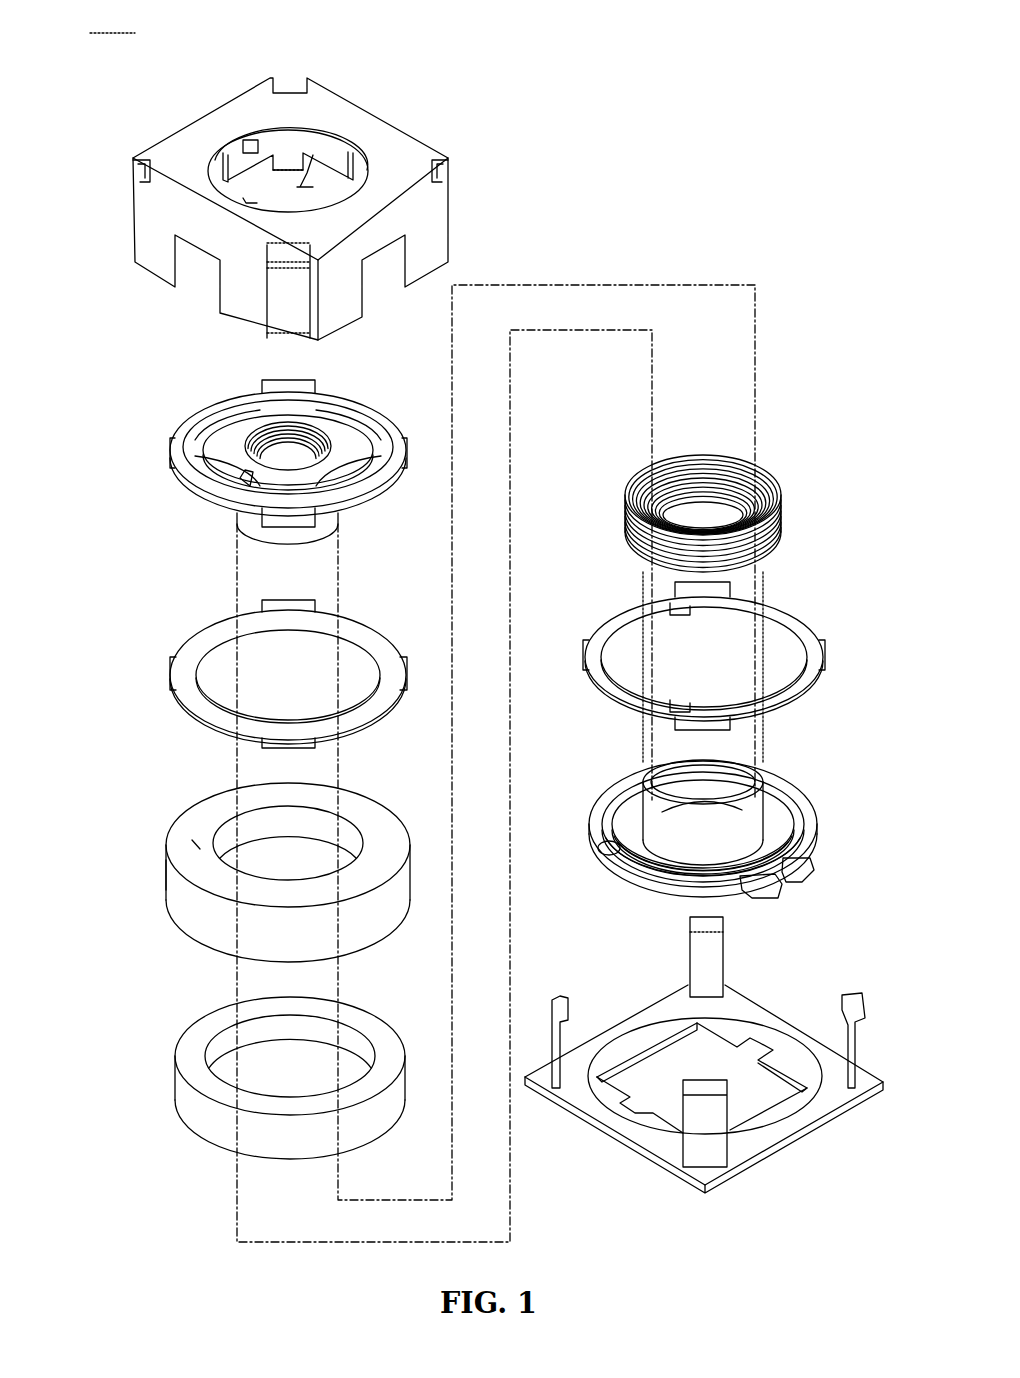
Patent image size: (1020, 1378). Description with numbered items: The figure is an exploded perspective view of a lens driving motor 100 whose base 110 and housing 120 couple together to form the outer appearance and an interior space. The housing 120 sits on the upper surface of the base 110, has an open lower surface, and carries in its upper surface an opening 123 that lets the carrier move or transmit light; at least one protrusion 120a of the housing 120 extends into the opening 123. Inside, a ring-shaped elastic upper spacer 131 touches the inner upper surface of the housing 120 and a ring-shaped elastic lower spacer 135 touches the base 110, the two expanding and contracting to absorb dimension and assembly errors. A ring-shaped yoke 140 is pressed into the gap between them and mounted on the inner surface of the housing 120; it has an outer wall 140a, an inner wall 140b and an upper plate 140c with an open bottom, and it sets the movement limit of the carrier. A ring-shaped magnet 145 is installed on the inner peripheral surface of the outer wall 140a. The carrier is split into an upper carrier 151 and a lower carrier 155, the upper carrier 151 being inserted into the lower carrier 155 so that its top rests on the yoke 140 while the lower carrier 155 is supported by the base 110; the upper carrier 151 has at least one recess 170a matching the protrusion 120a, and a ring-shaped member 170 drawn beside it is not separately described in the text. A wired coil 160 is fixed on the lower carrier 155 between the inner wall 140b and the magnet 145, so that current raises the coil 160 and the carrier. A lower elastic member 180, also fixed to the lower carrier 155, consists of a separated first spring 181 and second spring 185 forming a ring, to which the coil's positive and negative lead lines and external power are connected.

The lens driving motor 100 is at (114, 19).
The base 110 is at (837, 1110).
The housing 120 is at (185, 152).
The protrusion 120a is at (250, 147).
The opening 123 is at (313, 155).
The upper spacer 131 is at (175, 672).
The lower spacer 135 is at (827, 650).
The yoke 140 is at (237, 887).
The outer wall 140a is at (173, 888).
The inner wall 140b is at (223, 835).
The upper plate 140c is at (192, 847).
The magnet 145 is at (182, 1087).
The upper carrier 151 is at (335, 528).
The lower carrier 155 is at (637, 808).
The coil 160 is at (782, 520).
The holder ring 170 is at (172, 453).
The recess 170a is at (240, 478).
The lower elastic member 180 is at (742, 826).
The first spring 181 is at (808, 837).
The second spring 185 is at (740, 890).